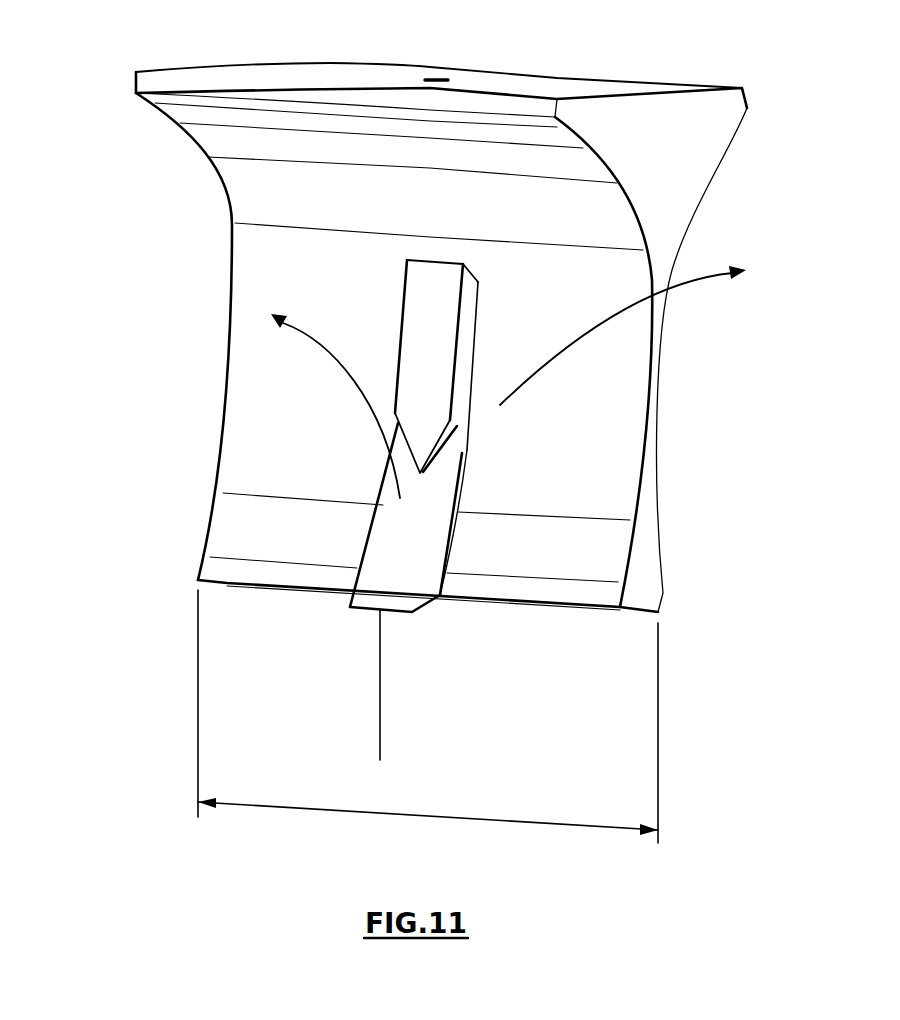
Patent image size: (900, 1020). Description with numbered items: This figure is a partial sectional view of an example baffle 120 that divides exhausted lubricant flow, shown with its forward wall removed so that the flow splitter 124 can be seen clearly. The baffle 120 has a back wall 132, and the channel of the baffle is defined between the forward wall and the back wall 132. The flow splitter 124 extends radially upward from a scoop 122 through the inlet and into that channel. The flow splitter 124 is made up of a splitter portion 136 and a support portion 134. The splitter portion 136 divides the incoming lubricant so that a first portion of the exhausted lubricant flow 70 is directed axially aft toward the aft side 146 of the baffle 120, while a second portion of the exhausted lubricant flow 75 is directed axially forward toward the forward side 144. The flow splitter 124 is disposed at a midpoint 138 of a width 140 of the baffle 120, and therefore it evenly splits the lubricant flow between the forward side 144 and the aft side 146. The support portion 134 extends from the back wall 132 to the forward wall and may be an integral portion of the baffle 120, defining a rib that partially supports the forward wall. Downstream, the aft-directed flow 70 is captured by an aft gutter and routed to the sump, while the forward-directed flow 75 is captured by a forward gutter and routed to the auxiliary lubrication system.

The baffle 120 is at (507, 453).
The scoop 122 is at (416, 460).
The flow splitter 124 is at (407, 538).
The support portion 134 is at (468, 350).
The splitter portion 136 is at (446, 452).
The midpoint 138 is at (381, 712).
The width 140 is at (445, 816).
The forward side 144 is at (231, 220).
The aft side 146 is at (667, 242).
The back wall 132 is at (284, 445).
The first portion of the exhausted lubricant flow 70 is at (563, 356).
The second portion of the exhausted lubricant flow 75 is at (328, 363).